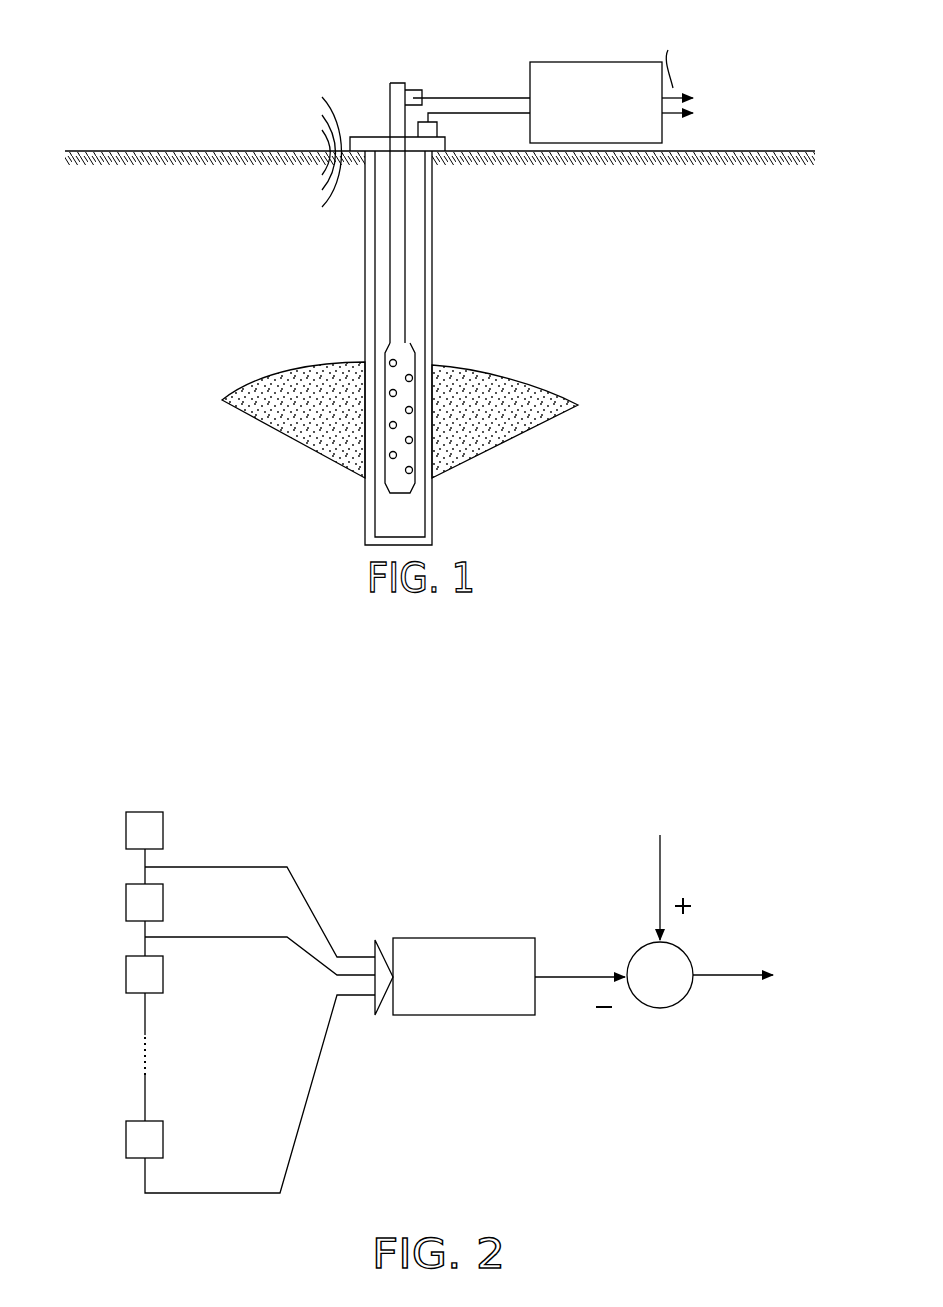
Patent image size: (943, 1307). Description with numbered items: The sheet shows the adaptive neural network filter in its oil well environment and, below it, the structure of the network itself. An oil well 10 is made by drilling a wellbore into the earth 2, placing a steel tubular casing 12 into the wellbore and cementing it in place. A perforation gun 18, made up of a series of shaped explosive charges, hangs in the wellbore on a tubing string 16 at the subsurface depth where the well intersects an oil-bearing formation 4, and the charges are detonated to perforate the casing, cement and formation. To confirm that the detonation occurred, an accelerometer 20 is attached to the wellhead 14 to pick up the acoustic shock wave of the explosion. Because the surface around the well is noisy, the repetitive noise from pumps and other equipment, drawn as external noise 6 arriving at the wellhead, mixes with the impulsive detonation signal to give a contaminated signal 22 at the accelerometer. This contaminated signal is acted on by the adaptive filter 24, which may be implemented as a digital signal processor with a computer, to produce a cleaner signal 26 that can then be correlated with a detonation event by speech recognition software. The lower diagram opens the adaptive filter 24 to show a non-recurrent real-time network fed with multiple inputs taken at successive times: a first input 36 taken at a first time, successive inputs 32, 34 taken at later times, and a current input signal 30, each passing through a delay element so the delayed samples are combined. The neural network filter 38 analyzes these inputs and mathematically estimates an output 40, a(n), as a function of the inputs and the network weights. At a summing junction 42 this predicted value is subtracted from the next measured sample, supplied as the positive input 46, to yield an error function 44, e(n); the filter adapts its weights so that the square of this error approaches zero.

In FIG. 1, the earth 2 is at (196, 358).
In FIG. 1, the oil-bearing formation 4 is at (543, 465).
In FIG. 1, the external noise 6 is at (245, 110).
In FIG. 1, the oil well 10 is at (98, 130).
In FIG. 1, the casing 12 is at (492, 275).
In FIG. 1, the wellhead 14 is at (475, 218).
In FIG. 1, the tubing string 16 is at (398, 250).
In FIG. 1, the perforation gun 18 is at (495, 337).
In FIG. 1, the accelerometer 20 is at (416, 98).
In FIG. 1, the contaminated signal 22 is at (453, 90).
In FIG. 1, the adaptive filter 24 is at (527, 80).
In FIG. 2, the adaptive filter 24 is at (470, 803).
In FIG. 1, the cleaner signal 26 is at (687, 88).
In FIG. 2, the current input signal 30 is at (126, 832).
In FIG. 2, the successive input 32 is at (126, 904).
In FIG. 2, the successive input 34 is at (126, 975).
In FIG. 2, the first input 36 is at (126, 1142).
In FIG. 2, the neural network filter 38 is at (465, 1015).
In FIG. 2, the output 40 is at (573, 980).
In FIG. 2, the summing junction 42 is at (687, 1000).
In FIG. 2, the error function 44 is at (727, 975).
In FIG. 2, the desired signal input 46 is at (660, 862).